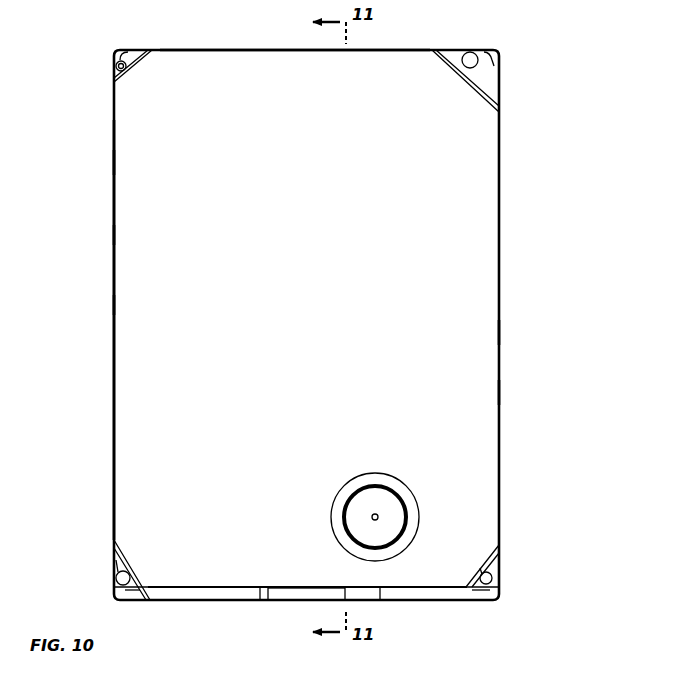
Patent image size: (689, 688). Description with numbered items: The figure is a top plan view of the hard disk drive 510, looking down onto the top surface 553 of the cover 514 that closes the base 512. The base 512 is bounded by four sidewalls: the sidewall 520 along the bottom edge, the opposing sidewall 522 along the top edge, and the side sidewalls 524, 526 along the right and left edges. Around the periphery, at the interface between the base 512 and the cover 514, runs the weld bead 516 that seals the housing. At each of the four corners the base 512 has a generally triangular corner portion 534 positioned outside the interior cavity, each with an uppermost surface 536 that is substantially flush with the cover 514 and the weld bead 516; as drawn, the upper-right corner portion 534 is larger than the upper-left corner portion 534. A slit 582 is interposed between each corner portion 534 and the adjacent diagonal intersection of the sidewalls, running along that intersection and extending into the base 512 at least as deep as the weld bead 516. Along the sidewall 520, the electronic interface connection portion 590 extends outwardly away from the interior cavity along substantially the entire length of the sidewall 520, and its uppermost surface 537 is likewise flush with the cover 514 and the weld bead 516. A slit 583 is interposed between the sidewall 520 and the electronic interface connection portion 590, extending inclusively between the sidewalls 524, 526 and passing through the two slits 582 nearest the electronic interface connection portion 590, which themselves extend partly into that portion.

The hard disk drive 510 is at (540, 155).
The base 512 is at (114, 422).
The cover 514 is at (460, 305).
The weld bead 516 is at (114, 162).
The sidewall 520 is at (262, 600).
The sidewall 522 is at (281, 50).
The sidewall 524 is at (499, 330).
The sidewall 526 is at (114, 305).
The corner portion 534 is at (112, 55).
The uppermost surface 536 is at (128, 53).
The uppermost surface 537 is at (435, 595).
The top surface 553 is at (133, 233).
The slit 582 is at (118, 78).
The slit 583 is at (441, 590).
The electronic interface connection portion 590 is at (256, 604).